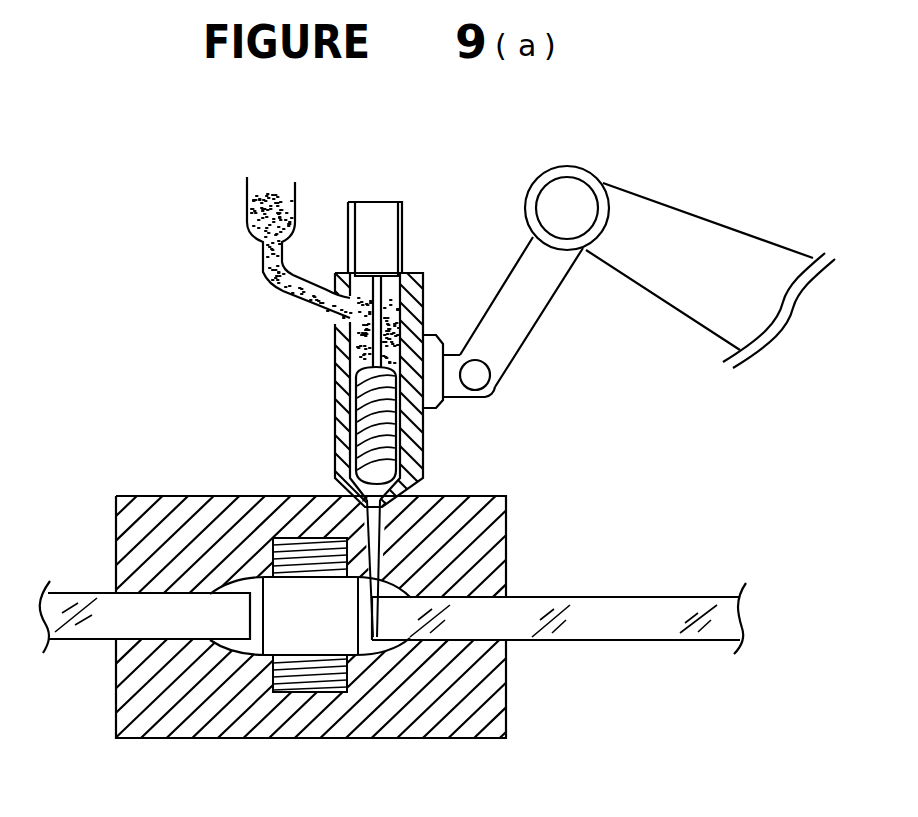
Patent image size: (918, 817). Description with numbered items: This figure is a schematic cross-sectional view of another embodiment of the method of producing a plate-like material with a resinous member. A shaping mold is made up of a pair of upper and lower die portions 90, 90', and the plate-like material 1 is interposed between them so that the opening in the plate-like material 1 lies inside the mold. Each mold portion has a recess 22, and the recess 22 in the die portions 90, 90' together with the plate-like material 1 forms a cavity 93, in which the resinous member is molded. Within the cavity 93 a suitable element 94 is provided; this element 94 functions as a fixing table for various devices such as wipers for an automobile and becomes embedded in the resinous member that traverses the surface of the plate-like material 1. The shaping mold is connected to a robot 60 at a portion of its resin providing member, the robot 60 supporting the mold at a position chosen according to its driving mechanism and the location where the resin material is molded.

The robot 60 is at (729, 229).
The upper die portion 90 is at (311, 467).
The lower die portion 90' is at (311, 686).
The element 94 is at (333, 630).
The recess 22 is at (375, 642).
The cavity 93 is at (378, 568).
The plate-like material 1 is at (593, 640).